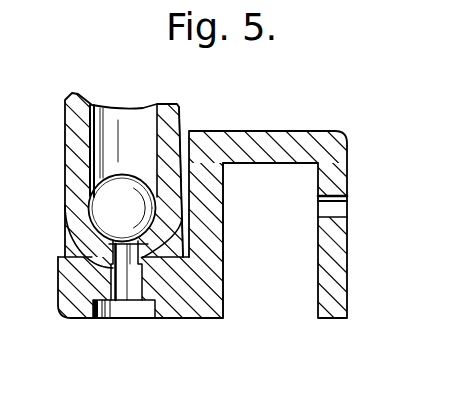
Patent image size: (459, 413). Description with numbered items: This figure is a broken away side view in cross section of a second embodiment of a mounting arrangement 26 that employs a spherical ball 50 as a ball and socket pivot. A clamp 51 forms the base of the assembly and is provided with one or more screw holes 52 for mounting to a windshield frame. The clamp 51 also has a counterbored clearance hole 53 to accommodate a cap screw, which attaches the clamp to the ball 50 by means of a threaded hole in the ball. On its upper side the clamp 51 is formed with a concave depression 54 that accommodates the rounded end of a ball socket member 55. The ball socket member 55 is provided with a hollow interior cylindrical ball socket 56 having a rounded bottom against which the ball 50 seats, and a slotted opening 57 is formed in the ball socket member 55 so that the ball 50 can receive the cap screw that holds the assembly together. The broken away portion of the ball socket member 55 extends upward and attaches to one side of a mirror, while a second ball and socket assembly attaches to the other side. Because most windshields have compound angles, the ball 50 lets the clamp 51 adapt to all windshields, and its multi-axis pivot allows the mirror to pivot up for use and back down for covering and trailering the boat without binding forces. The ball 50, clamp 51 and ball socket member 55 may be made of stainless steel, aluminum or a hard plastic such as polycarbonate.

The mounting arrangement 26 is at (274, 86).
The spherical ball 50 is at (139, 175).
The clamp 51 is at (231, 231).
The screw hole 52 is at (313, 207).
The counterbored clearance hole 53 is at (108, 320).
The concave depression 54 is at (65, 276).
The ball socket member 55 is at (68, 129).
The hollow interior cylindrical ball socket 56 is at (156, 106).
The slotted opening 57 is at (84, 253).